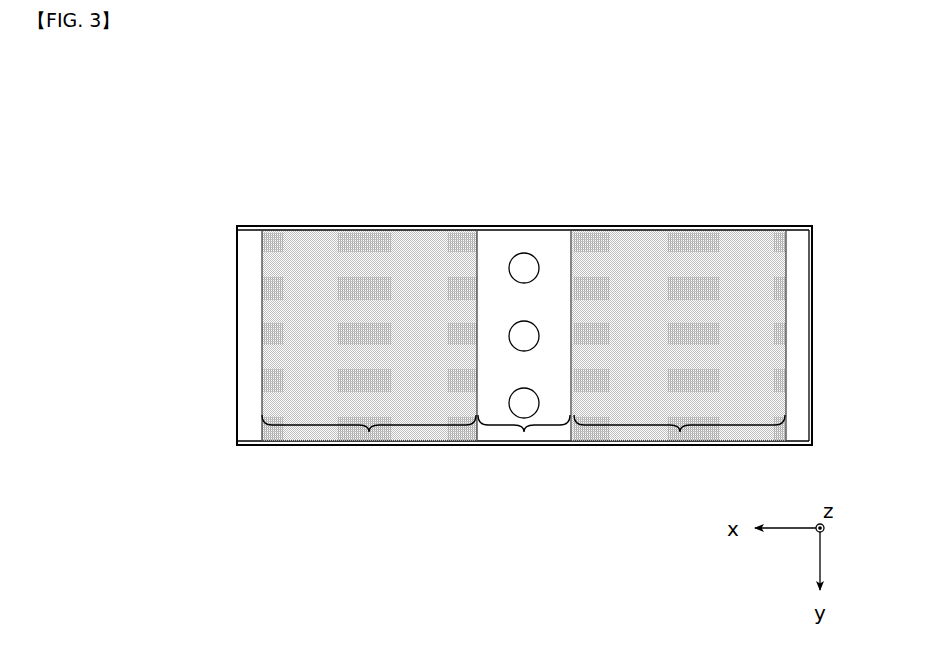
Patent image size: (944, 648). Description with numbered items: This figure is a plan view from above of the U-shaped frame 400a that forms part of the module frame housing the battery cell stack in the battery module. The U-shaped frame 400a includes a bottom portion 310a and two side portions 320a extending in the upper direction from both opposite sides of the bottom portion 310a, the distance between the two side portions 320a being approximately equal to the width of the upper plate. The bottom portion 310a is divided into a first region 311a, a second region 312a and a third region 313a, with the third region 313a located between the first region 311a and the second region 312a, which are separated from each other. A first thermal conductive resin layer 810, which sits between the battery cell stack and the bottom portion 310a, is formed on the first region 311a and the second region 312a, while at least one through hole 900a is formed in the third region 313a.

The U-shaped frame 400a is at (537, 104).
The side portion 320a is at (320, 226).
The through hole 900a is at (524, 253).
The bottom portion 310a is at (228, 287).
The first thermal conductive resin layer 810 is at (289, 350).
The first region 311a is at (369, 432).
The third region 313a is at (524, 432).
The second region 312a is at (680, 432).